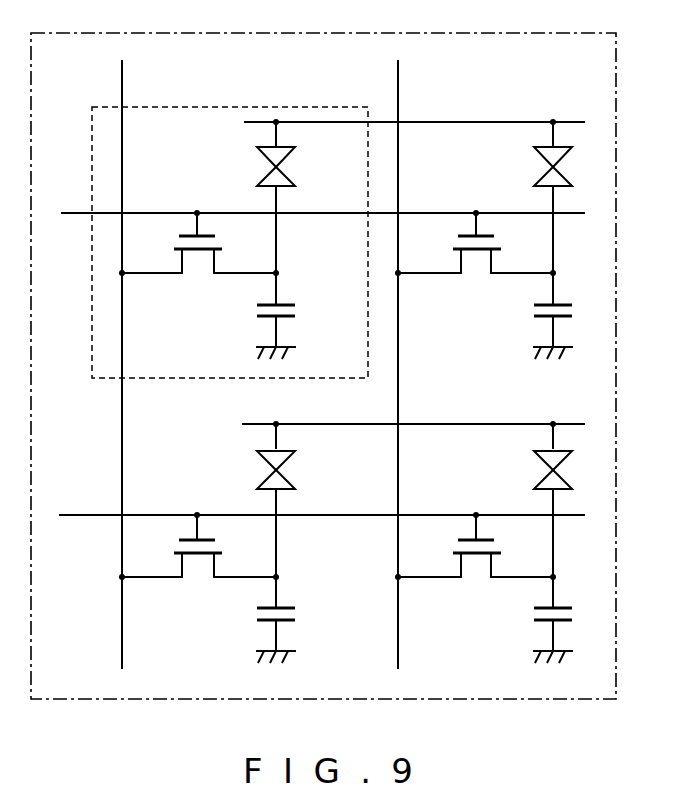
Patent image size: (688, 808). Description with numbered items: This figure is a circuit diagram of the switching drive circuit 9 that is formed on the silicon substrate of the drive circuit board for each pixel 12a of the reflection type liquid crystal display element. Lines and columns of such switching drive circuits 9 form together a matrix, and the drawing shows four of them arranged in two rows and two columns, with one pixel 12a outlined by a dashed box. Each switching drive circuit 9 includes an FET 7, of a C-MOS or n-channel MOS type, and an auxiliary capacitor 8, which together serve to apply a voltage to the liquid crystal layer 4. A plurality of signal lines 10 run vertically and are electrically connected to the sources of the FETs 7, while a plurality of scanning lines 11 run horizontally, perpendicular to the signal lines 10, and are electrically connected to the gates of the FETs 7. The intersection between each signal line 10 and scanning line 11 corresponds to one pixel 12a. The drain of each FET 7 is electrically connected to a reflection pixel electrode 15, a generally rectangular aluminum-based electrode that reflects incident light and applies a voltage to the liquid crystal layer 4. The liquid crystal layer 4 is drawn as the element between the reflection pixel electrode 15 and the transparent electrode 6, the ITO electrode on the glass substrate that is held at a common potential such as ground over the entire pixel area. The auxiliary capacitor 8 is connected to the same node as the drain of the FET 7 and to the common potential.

The switching drive circuit 9 is at (616, 52).
The signal line 10 is at (124, 137).
The scanning line 11 is at (73, 212).
The pixel 12a is at (206, 107).
The liquid crystal layer 4 is at (279, 166).
The transparent electrode 6 is at (280, 150).
The reflection pixel electrode 15 is at (287, 187).
The FET 7 is at (197, 258).
The auxiliary capacitor 8 is at (283, 304).